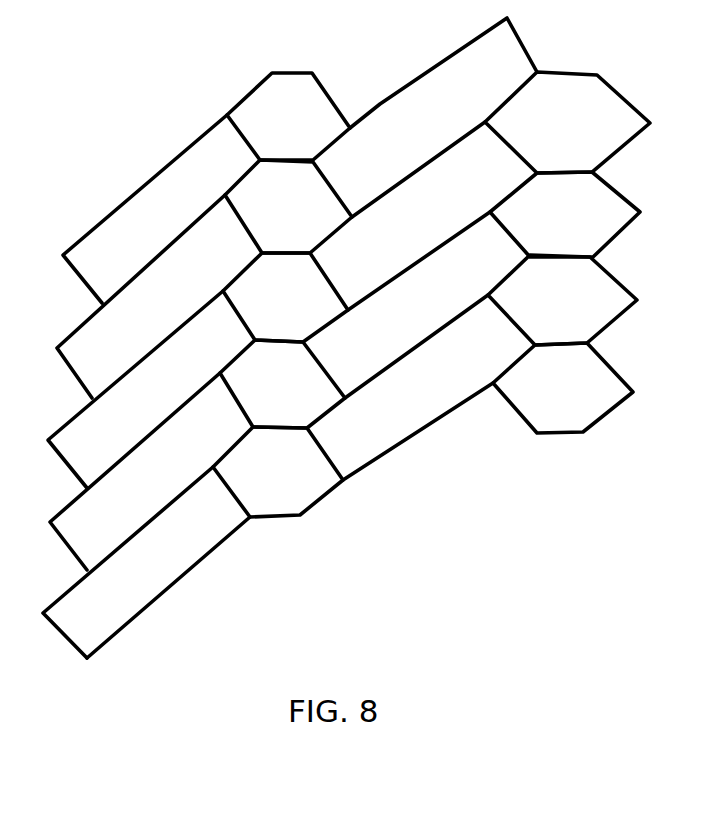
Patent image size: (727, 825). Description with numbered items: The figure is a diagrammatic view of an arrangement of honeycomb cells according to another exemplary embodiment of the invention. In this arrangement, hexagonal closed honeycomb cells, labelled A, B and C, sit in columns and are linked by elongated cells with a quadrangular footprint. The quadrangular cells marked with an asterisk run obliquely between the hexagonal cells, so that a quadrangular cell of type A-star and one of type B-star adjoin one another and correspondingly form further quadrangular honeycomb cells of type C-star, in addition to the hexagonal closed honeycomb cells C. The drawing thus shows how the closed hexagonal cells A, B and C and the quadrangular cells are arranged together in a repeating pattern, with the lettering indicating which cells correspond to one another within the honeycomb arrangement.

The honeycomb cell A is at (431, 257).
The honeycomb cell B is at (431, 294).
The hexagonal closed honeycomb cell C is at (428, 250).